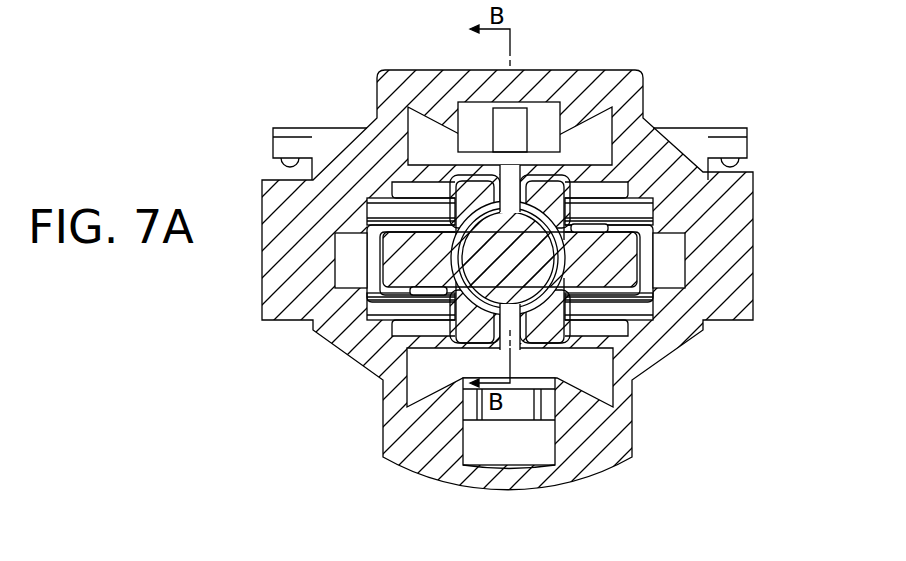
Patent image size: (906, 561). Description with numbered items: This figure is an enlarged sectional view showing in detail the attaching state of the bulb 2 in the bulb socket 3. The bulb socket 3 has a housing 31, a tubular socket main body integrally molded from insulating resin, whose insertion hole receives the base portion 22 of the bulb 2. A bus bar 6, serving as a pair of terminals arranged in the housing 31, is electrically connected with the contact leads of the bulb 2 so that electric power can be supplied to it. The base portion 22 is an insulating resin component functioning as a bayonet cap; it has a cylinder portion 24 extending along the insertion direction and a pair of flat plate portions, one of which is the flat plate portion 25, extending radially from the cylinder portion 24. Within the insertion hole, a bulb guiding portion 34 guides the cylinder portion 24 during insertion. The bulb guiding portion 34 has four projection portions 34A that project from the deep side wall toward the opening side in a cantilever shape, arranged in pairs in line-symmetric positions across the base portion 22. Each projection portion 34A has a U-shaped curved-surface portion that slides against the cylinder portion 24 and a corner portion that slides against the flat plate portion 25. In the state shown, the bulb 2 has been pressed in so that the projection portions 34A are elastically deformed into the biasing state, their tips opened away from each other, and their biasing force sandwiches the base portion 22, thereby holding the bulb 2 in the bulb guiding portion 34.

The bulb socket 3 is at (303, 85).
The housing 31 is at (378, 78).
The bulb 2 is at (672, 166).
The bus bar 6 is at (386, 323).
The flat plate portion 25 is at (408, 290).
The base portion 22 is at (630, 262).
The projection portion 34A is at (478, 180).
The cylinder portion 24 is at (510, 302).
The bulb guiding portion 34 is at (514, 190).